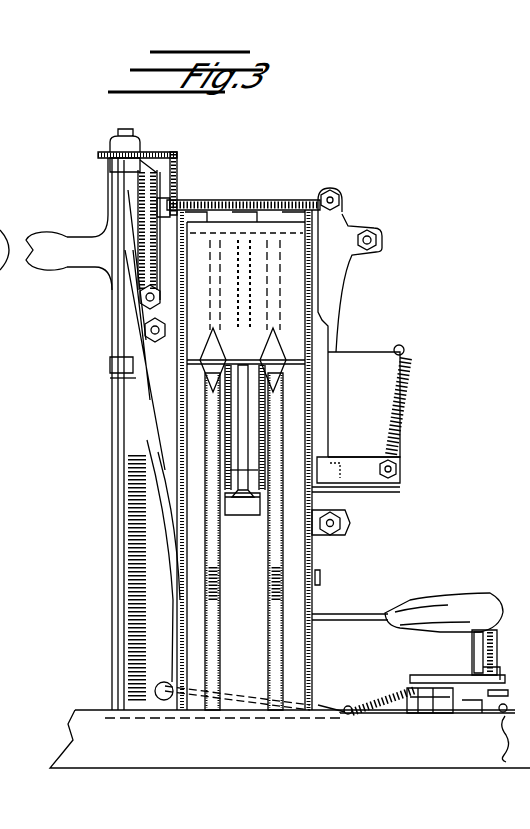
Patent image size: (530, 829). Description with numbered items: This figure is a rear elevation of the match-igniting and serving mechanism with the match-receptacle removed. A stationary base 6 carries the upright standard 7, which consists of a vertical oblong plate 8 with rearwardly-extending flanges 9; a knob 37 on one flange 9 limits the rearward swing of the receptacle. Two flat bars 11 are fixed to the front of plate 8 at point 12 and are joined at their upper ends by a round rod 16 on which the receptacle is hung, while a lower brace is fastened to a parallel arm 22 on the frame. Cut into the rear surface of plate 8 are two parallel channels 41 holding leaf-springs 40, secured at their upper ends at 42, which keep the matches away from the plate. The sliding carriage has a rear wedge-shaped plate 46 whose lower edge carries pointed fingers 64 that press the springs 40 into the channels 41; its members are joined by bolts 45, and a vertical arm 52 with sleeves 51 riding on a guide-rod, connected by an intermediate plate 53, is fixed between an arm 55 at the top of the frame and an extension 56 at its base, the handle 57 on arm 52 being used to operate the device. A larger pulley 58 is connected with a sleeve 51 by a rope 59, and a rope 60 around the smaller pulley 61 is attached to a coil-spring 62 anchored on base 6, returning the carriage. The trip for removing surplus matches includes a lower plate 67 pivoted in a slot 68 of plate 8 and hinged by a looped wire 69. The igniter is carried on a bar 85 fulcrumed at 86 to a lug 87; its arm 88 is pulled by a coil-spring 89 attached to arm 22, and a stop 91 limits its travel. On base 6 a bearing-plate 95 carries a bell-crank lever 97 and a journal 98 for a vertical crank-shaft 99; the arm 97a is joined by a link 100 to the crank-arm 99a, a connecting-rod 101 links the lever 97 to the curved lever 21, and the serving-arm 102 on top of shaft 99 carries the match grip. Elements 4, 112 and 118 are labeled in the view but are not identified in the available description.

The hand wheel 4 is at (6, 238).
The stationary base 6 is at (290, 739).
The vertically-extending frame 7 is at (151, 668).
The vertical oblong plate 8 is at (177, 441).
The rearwardly-extending flanges 9 is at (180, 588).
The flat bars 11 is at (213, 214).
The securing point 12 is at (330, 192).
The round rod 16 is at (293, 207).
The lever 21 is at (170, 400).
The parallel arm 22 is at (358, 470).
The knob 37 is at (322, 578).
The leaf-springs 40 is at (218, 548).
The channels 41 is at (243, 413).
The securing point of springs 42 is at (235, 455).
The bolts 45 is at (139, 290).
The wedge-shaped plate 46 is at (246, 312).
The sleeves 51 is at (112, 165).
The vertical arm 52 is at (110, 190).
The intermediate plate 53 is at (160, 313).
The arm 55 is at (110, 144).
The extension 56 is at (108, 716).
The handle 57 is at (77, 243).
The larger pulley 58 is at (158, 176).
The rope 59 is at (140, 327).
The rope 60 is at (125, 380).
The smaller pulley 61 is at (176, 196).
The coil-spring 62 is at (128, 533).
The pointed fingers 64 is at (370, 306).
The lower trip plate 67 is at (242, 504).
The slot 68 is at (160, 470).
The looped wire 69 is at (268, 427).
The bar 85 is at (330, 378).
The fulcrum 86 is at (352, 232).
The lug 87 is at (378, 238).
The arm 88 is at (396, 344).
The coil-spring 89 is at (398, 406).
The stop 91 is at (398, 465).
The bearing-plate 95 is at (428, 713).
The bell-crank lever 97 is at (492, 688).
The bell-crank arm 97a is at (510, 691).
The journal 98 is at (474, 658).
The crank-shaft 99 is at (471, 650).
The crank-arm 99a is at (476, 714).
The link 100 is at (459, 714).
The connecting-rod 101 is at (318, 706).
The serving-arm 102 is at (356, 620).
The spring 112 is at (386, 696).
The pedal 118 is at (446, 600).